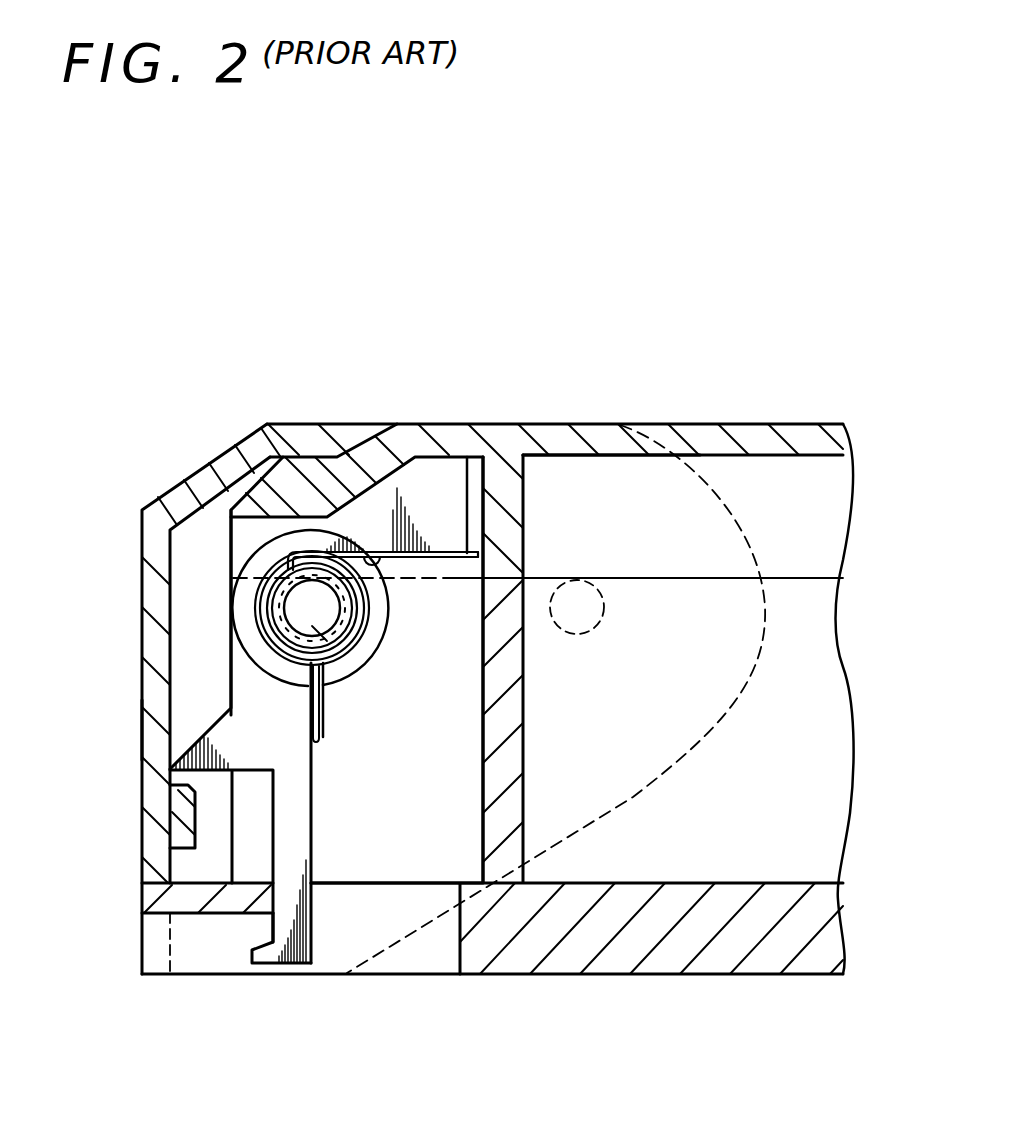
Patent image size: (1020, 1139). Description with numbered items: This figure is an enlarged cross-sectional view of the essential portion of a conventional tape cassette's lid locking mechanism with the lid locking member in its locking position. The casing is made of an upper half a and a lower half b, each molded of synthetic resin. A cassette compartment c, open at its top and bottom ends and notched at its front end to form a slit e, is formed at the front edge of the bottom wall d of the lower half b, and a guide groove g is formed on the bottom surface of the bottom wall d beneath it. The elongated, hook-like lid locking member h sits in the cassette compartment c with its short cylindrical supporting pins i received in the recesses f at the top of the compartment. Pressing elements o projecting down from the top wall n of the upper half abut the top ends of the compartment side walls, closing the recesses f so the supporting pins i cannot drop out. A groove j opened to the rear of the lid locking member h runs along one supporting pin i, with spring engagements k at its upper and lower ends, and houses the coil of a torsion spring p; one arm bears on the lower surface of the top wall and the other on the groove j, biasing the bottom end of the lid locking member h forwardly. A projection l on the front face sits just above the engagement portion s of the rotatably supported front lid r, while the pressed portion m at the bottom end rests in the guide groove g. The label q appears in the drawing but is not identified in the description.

The upper half a is at (698, 430).
The lower half b is at (598, 975).
The cassette compartment c is at (429, 793).
The bottom wall d is at (725, 895).
The slit e is at (253, 828).
The recesses f is at (340, 632).
The guide groove g is at (142, 920).
The lid locking member h is at (228, 670).
The supporting pins i is at (383, 560).
The groove j is at (286, 566).
The spring engagements k is at (384, 552).
The projection l is at (142, 726).
The pressed portion m is at (257, 965).
The top wall n is at (593, 430).
The pressing elements o is at (243, 530).
The torsion spring p is at (357, 609).
The plate q is at (277, 903).
The front lid r is at (142, 593).
The engagement portion s is at (142, 779).